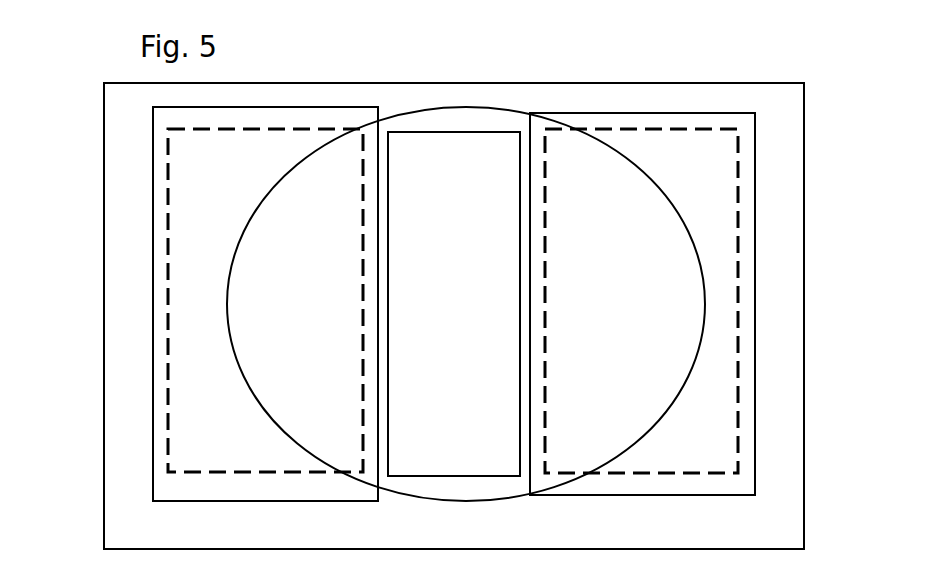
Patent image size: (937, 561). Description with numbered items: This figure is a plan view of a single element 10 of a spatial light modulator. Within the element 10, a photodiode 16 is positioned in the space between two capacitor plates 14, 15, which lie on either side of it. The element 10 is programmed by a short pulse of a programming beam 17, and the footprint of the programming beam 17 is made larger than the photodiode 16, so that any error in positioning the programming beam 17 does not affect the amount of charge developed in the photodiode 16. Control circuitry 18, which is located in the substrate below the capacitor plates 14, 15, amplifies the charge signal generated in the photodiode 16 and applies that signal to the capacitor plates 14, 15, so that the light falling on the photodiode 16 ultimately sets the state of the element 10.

The element 10 is at (705, 83).
The capacitor plate 14 is at (153, 281).
The capacitor plate 15 is at (757, 224).
The photodiode 16 is at (405, 132).
The programming beam 17 is at (480, 106).
The control circuitry 18 is at (167, 382).